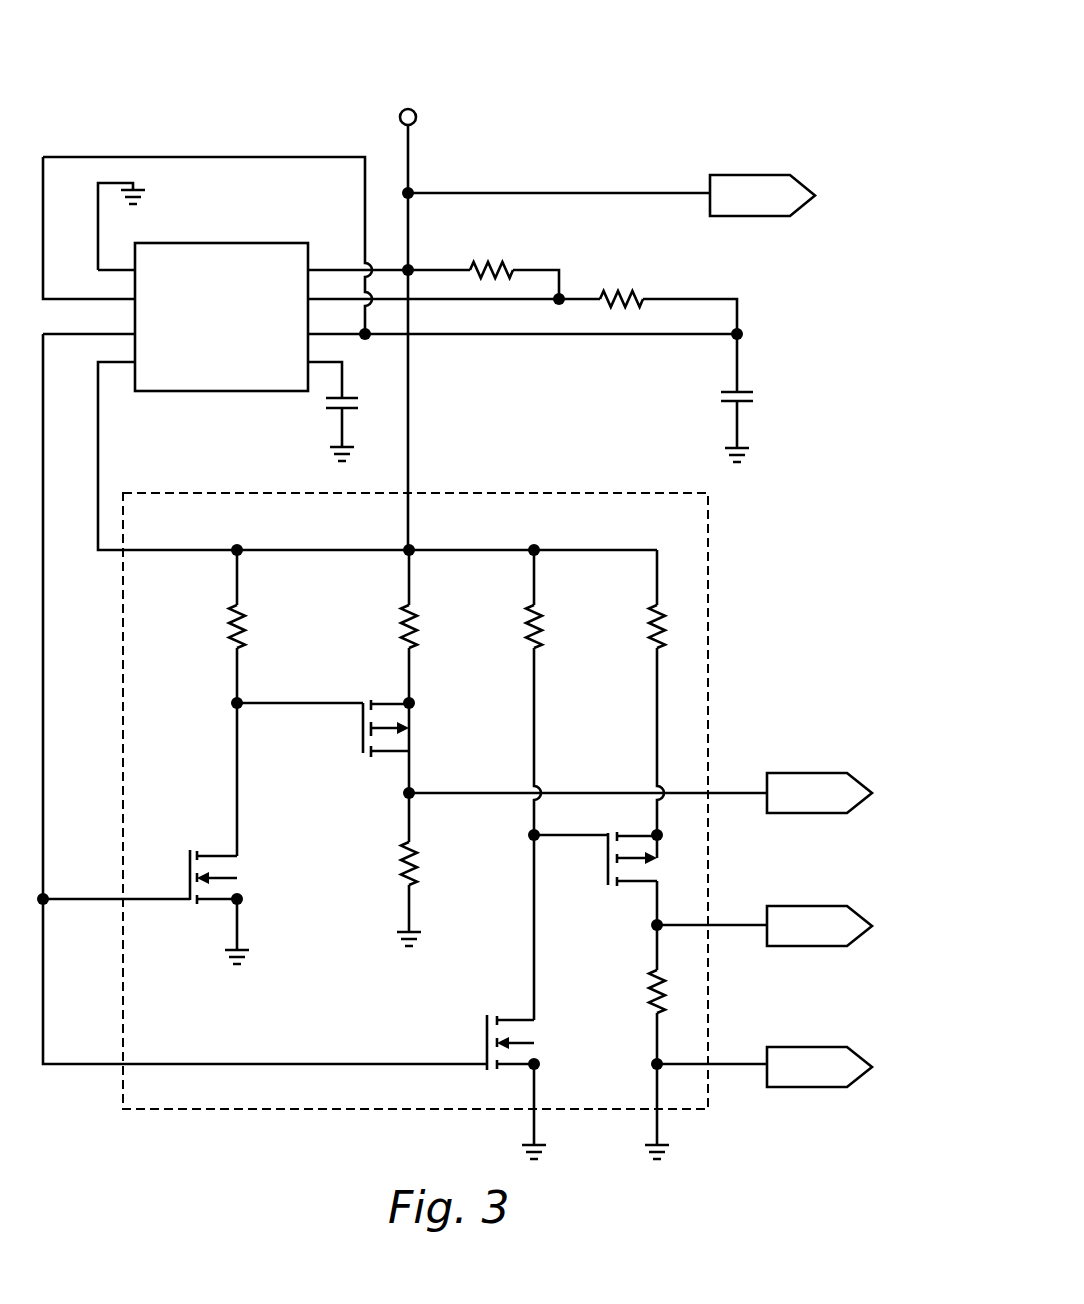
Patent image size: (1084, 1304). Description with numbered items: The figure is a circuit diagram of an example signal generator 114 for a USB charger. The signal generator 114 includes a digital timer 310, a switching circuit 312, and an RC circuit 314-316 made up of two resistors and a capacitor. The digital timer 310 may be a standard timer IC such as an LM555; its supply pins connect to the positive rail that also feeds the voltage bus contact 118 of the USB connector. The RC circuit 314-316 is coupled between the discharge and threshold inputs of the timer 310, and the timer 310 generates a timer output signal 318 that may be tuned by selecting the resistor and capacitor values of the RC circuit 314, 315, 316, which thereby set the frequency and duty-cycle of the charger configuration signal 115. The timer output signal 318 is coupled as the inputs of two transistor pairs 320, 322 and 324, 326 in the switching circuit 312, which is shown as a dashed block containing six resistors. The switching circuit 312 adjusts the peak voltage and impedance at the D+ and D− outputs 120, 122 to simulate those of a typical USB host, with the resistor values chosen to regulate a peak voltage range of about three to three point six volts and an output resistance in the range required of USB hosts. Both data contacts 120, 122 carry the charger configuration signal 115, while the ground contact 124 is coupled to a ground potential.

The signal generator 114 is at (683, 86).
The voltage bus (Vbus) contact 118 is at (758, 175).
The digital timer 310 is at (228, 243).
The RC circuit resistor 314 is at (514, 268).
The RC circuit resistor 315 is at (643, 297).
The RC circuit capacitor 316 is at (718, 397).
The switching circuit 312 is at (708, 567).
The timer output signal 318 is at (43, 737).
The transistor 320 is at (215, 848).
The transistor 322 is at (390, 755).
The transistor 324 is at (513, 1013).
The transistor 326 is at (630, 887).
The charger configuration signal 115 is at (736, 793).
The positive data (D+) contact 120 is at (833, 773).
The negative data (D−) contact 122 is at (815, 906).
The ground contact 124 is at (818, 1047).